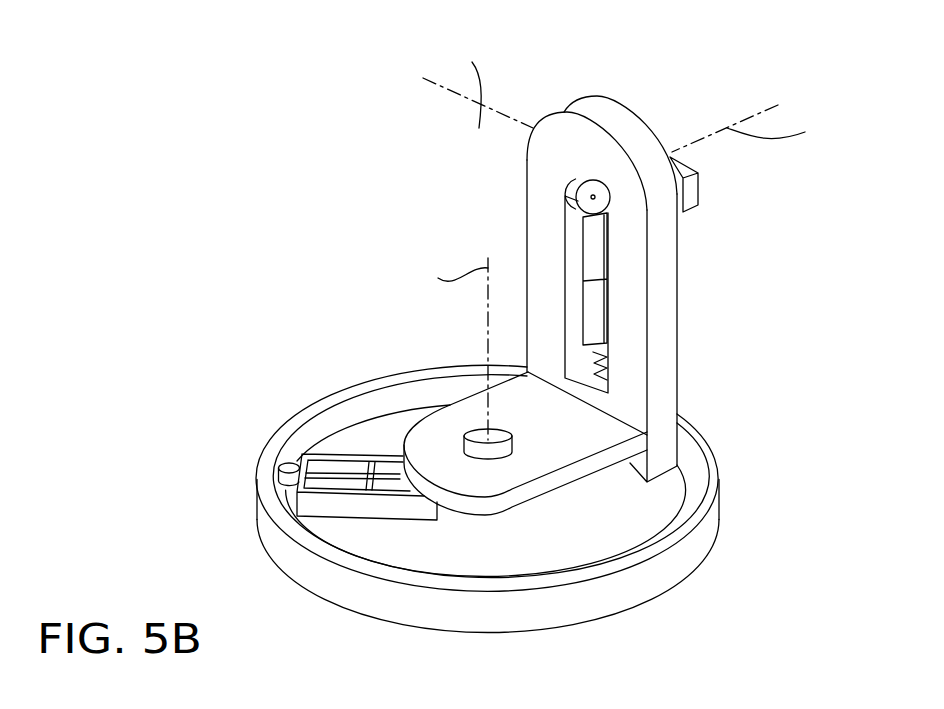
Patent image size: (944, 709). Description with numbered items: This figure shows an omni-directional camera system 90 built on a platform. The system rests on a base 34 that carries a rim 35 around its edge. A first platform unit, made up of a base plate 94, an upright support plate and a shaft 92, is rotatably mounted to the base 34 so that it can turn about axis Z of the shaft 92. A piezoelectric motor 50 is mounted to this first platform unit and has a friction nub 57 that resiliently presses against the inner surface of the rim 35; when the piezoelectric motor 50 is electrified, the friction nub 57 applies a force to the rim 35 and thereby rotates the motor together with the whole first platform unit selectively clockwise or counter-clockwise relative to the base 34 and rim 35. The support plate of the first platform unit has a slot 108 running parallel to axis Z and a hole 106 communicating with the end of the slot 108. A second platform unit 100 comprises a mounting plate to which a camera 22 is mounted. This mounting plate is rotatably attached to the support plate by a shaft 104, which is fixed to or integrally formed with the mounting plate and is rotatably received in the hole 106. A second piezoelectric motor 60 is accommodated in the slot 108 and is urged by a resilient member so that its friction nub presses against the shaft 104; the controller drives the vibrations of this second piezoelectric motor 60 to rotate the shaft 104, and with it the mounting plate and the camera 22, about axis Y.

The camera 22 is at (688, 192).
The base 34 is at (605, 533).
The rim 35 is at (710, 480).
The piezoelectric motor 50 is at (352, 522).
The friction nub 57 is at (291, 468).
The second piezoelectric motor 60 is at (578, 262).
The omni-directional camera system 90 is at (320, 207).
The shaft 92 is at (493, 459).
The base plate 94 is at (583, 442).
The second platform unit 100 is at (615, 88).
The shaft 104 is at (593, 196).
The hole 106 is at (580, 182).
The slot 108 is at (577, 358).